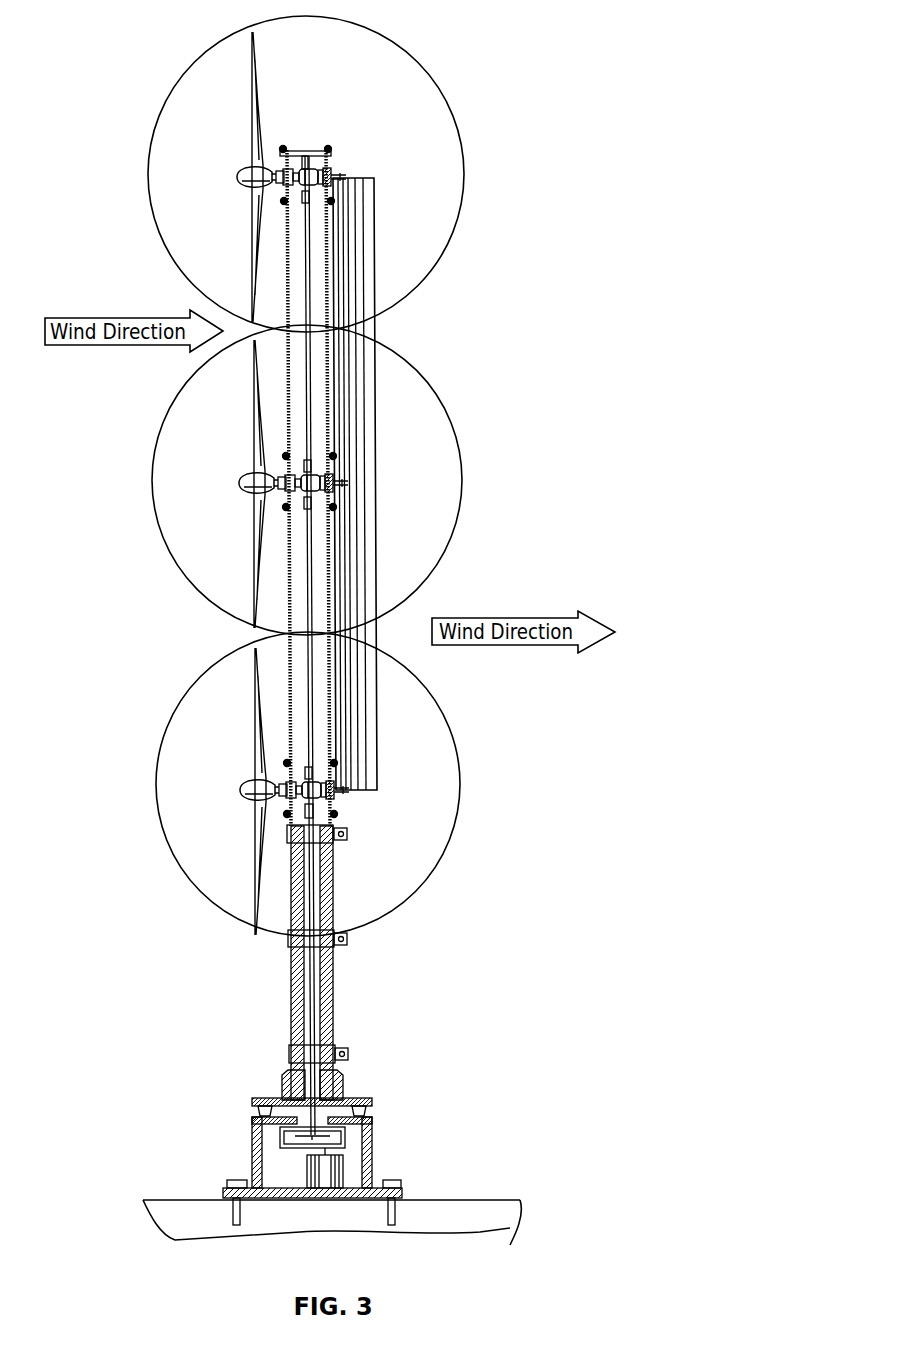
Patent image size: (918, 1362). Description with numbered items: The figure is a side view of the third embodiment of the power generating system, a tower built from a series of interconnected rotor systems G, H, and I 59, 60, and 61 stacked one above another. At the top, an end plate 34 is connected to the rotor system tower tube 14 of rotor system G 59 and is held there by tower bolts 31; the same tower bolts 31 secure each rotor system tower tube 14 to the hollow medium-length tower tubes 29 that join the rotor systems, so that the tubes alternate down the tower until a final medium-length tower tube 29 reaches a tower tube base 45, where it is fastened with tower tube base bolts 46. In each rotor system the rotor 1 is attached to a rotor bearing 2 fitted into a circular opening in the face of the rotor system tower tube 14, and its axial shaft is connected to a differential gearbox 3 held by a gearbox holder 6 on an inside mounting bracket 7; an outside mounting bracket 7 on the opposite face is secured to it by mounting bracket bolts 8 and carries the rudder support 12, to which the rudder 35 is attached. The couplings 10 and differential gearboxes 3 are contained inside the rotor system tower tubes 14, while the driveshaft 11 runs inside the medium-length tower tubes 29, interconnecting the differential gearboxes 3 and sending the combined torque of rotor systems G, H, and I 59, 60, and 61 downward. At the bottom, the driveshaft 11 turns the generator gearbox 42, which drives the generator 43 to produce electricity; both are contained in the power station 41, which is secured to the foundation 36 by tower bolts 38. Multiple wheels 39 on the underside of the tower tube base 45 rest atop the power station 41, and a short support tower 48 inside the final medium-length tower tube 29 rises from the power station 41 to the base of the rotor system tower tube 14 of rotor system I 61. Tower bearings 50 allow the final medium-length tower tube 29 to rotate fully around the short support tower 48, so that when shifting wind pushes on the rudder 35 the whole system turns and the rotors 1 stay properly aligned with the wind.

The rotor 1 is at (240, 182).
The rotor bearing 2 is at (263, 186).
The differential gearbox 3 is at (307, 170).
The gearbox holder 6 is at (334, 180).
The mounting bracket 7 is at (331, 186).
The mounting bracket bolts 8 is at (326, 166).
The coupling 10 is at (283, 200).
The driveshaft 11 is at (308, 262).
The rudder support 12 is at (349, 182).
The rotor system tower tube 14 is at (285, 158).
The medium-length tower tube 29 is at (328, 330).
The tower bolts 31 is at (283, 149).
The end plate 34 is at (303, 150).
The rudder 35 is at (371, 305).
The foundation 36 is at (518, 1200).
The tower bolts 38 is at (236, 1183).
The wheels 39 is at (260, 1112).
The power station 41 is at (255, 1168).
The generator gearbox 42 is at (346, 1141).
The generator 43 is at (344, 1168).
The tower tube base 45 is at (283, 1085).
The tower tube base bolts 46 is at (290, 1062).
The short support tower 48 is at (334, 1020).
The tower bearings 50 is at (339, 843).
The rotor system G 59 is at (465, 183).
The rotor system H 60 is at (467, 484).
The rotor system I 61 is at (470, 778).